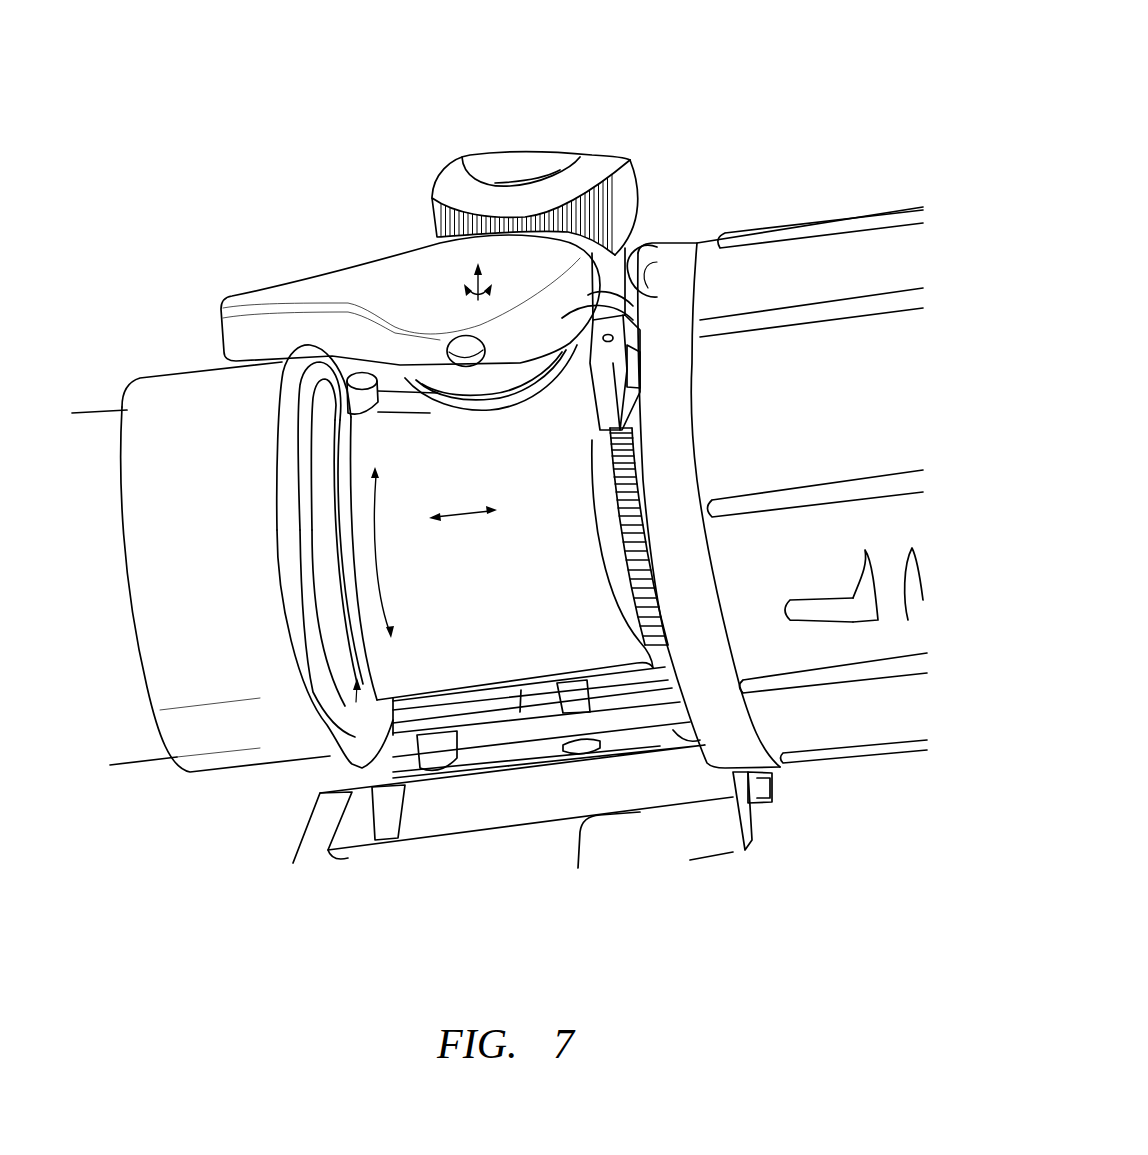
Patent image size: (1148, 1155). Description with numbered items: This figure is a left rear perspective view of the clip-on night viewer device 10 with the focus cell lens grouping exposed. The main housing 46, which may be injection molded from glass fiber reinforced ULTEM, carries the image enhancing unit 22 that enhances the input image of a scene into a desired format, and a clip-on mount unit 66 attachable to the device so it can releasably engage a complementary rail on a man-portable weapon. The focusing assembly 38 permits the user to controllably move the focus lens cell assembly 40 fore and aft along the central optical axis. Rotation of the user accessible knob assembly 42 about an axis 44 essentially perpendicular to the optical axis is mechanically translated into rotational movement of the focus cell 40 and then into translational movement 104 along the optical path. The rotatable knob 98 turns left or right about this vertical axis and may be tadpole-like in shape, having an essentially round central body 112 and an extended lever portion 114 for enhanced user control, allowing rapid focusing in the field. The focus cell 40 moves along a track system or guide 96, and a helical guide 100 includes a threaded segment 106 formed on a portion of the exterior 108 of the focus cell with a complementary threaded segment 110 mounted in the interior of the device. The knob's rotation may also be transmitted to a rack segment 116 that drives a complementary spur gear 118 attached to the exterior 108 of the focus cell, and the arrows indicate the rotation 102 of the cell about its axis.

The clip-on night viewer device 10 is at (499, 488).
The image enhancing unit 22 is at (137, 333).
The focusing assembly 38 is at (384, 183).
The focus lens cell assembly 40 is at (466, 662).
The knob assembly 42 is at (355, 284).
The axis 44 is at (465, 282).
The main housing 46 is at (774, 208).
The clip-on mount unit 66 is at (713, 843).
The track system or guide 96 is at (524, 683).
The rotatable knob 98 is at (553, 346).
The helical guide 100 is at (351, 697).
The ring rotation direction 102 is at (383, 578).
The translational movement 104 is at (463, 520).
The threaded segment 106 is at (347, 437).
The exterior 108 is at (587, 661).
The complementary threaded segment 110 is at (343, 640).
The central body 112 is at (556, 244).
The extended lever portion 114 is at (228, 275).
The rack segment 116 is at (610, 397).
The spur gear 118 is at (622, 529).